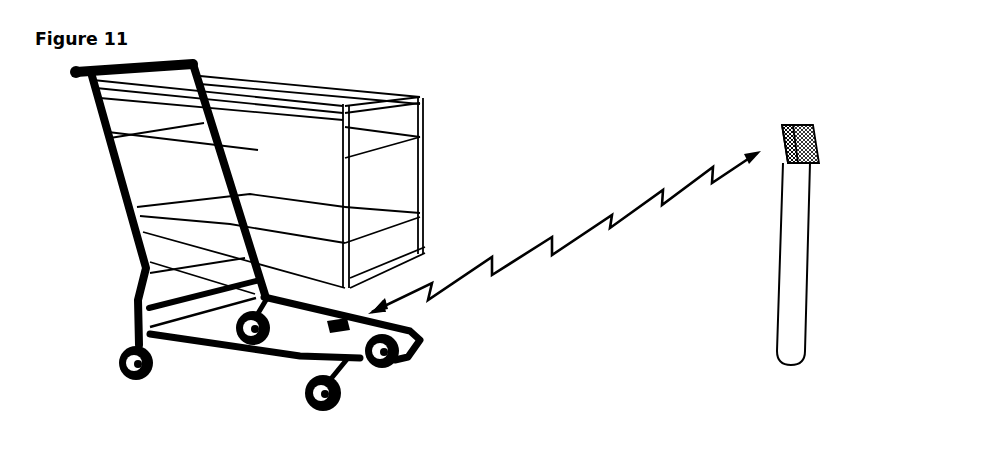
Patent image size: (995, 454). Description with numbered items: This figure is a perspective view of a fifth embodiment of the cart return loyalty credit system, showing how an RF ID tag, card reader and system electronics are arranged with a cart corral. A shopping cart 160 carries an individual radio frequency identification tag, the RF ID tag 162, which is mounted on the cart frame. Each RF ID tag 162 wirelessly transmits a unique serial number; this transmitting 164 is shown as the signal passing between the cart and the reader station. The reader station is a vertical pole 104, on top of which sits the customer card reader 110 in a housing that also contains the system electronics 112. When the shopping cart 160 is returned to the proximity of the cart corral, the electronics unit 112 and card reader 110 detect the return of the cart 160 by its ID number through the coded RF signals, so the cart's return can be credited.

The shopping cart 160 is at (113, 173).
The RF ID tag 162 is at (328, 331).
The wireless transmission 164 is at (574, 230).
The vertical pole 104 is at (811, 222).
The card reader 110 is at (790, 126).
The system electronics 112 is at (819, 143).